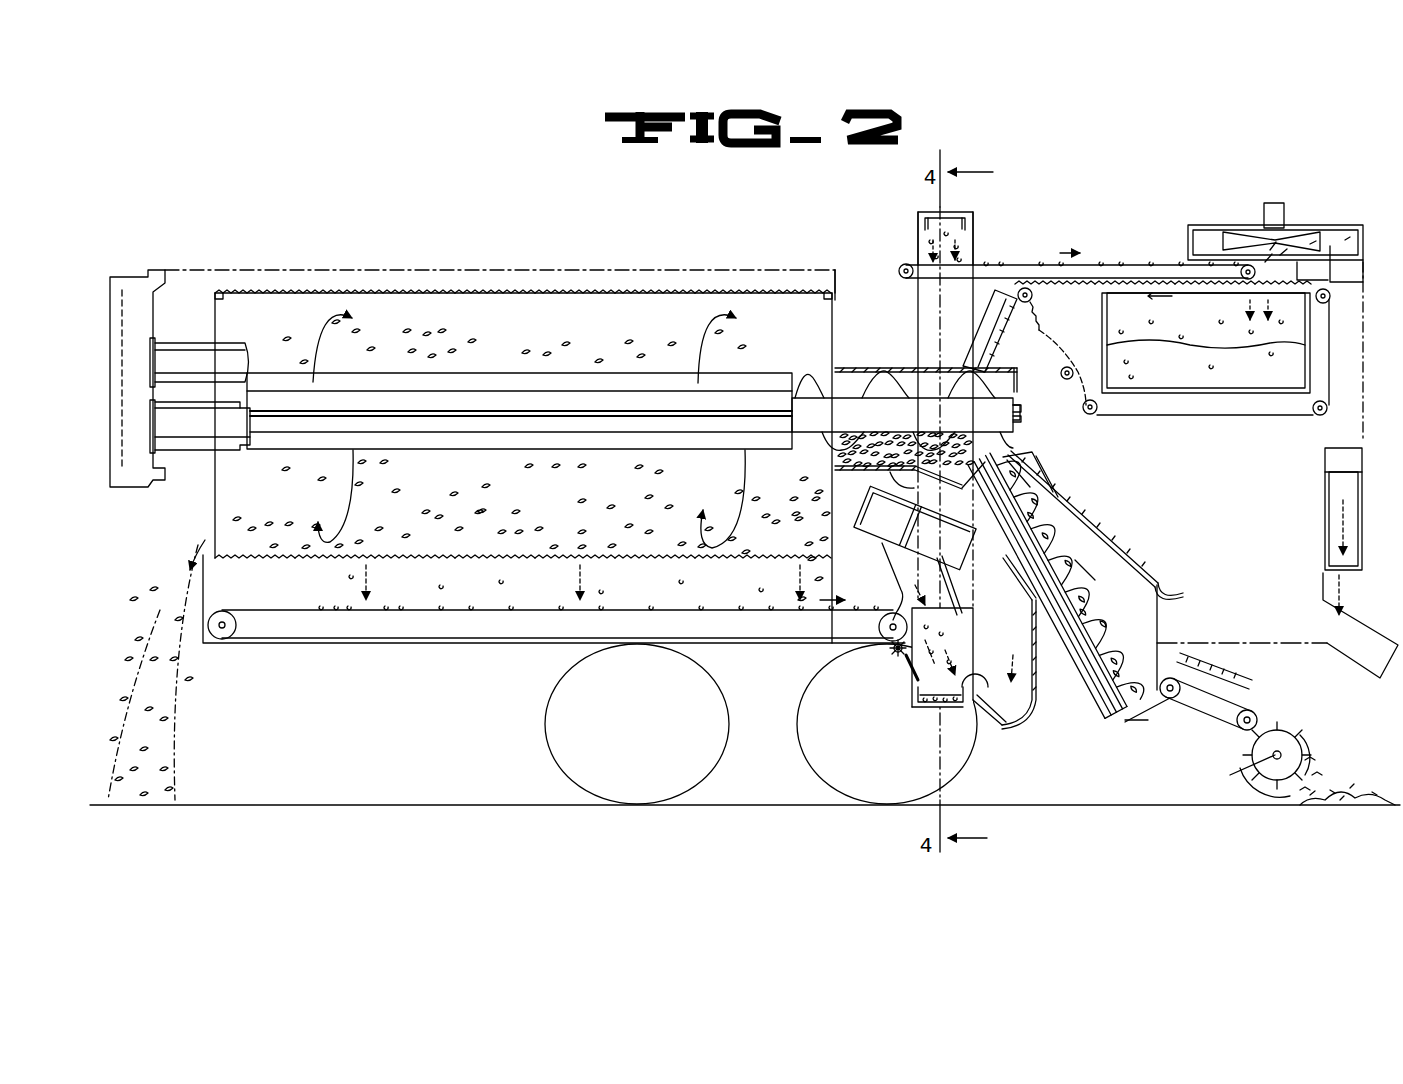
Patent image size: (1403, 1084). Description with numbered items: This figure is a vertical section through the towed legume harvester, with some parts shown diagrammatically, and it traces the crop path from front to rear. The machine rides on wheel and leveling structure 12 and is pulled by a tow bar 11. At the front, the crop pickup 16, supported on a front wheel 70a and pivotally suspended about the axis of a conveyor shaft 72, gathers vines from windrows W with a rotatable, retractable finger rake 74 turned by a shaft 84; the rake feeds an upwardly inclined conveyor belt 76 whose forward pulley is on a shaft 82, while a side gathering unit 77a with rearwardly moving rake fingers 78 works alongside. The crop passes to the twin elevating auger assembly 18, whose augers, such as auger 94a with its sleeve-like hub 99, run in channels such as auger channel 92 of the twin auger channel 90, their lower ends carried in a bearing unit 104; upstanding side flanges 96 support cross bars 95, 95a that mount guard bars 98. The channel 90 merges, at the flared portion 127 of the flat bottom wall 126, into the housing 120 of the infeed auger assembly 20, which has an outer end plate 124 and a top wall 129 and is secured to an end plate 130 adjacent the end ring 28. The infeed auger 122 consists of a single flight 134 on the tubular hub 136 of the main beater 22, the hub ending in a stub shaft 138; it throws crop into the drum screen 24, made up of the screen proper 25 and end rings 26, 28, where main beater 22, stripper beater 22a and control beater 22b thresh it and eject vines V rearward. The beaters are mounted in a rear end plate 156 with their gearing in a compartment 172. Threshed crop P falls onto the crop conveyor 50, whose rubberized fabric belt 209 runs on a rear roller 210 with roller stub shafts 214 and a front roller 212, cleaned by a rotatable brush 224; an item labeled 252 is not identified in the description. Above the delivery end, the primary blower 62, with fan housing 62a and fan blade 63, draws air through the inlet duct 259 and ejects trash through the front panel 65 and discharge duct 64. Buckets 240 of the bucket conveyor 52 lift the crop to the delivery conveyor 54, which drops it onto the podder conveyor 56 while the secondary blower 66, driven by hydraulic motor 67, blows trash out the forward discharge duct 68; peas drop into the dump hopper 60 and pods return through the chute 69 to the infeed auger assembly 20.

The compartment 172 is at (118, 276).
The end plate 156 is at (160, 312).
The end ring 26 is at (228, 293).
The screen proper 25 is at (350, 294).
The drum screen 24 is at (428, 290).
The main beater 22 is at (480, 370).
The stripper beater 22a is at (224, 340).
The control beater 22b is at (236, 450).
The end ring 28 is at (824, 293).
The end plate 130 is at (838, 292).
The infeed auger assembly 20 is at (830, 382).
The center line 252 is at (916, 300).
The housing 120 is at (895, 366).
The top wall 129 is at (925, 366).
The infeed auger 122 is at (832, 426).
The flared portion 127 is at (983, 460).
The bottom wall 126 is at (920, 487).
The bucket conveyor 52 is at (916, 230).
The buckets 240 is at (968, 219).
The delivery conveyor 54 is at (1170, 262).
The hydraulic motor 67 is at (1275, 202).
The secondary blower 66 is at (1310, 238).
The podder conveyor 56 is at (1098, 290).
The chute 69 is at (996, 348).
The outer end plate 124 is at (1020, 388).
The stub shaft 138 is at (1022, 408).
The tubular hub 136 is at (1012, 425).
The flight 134 is at (1036, 453).
The cross bar 95 is at (1042, 472).
The elevating auger assembly 18 is at (1098, 540).
The side flanges 96 is at (1062, 501).
The longitudinal bars 98 is at (1092, 520).
The cross bar 95a is at (1165, 583).
The front panel 65 is at (1095, 545).
The auger 94a is at (1080, 586).
The sleeve-like hub 99 is at (1082, 602).
The primary blower 62 is at (898, 550).
The fan housing 62a is at (876, 500).
The fan blade 63 is at (868, 522).
The inlet duct 259 is at (890, 600).
The twin auger channel 90 is at (1090, 678).
The discharge duct 64 is at (1003, 728).
The auger channel 92 is at (1052, 648).
The bearing unit 104 is at (1140, 724).
The side gathering unit 77a is at (1215, 655).
The shaft 82 is at (1225, 730).
The conveyor belt 76 is at (1205, 712).
The conveyor shaft 72 is at (1178, 710).
The finger rake 74 is at (1310, 720).
The shaft 84 is at (1236, 774).
The front wheel 70a is at (1250, 790).
The rake fingers 78 is at (1257, 700).
The crop pickup 16 is at (1292, 692).
The windrows W is at (1352, 788).
The wheel and leveling structure 12 is at (560, 673).
The rubberized fabric belt 209 is at (322, 645).
The roller stub shafts 214 is at (226, 624).
The rear roller 210 is at (226, 638).
The front roller 212 is at (878, 628).
The rotatable brush 224 is at (893, 653).
The crop conveyor 50 is at (392, 608).
The dump hopper 60 is at (1196, 394).
The forward discharge duct 68 is at (1322, 497).
The tow bar 11 is at (1380, 625).
The threshed crop P is at (990, 262).
The vines V is at (150, 600).